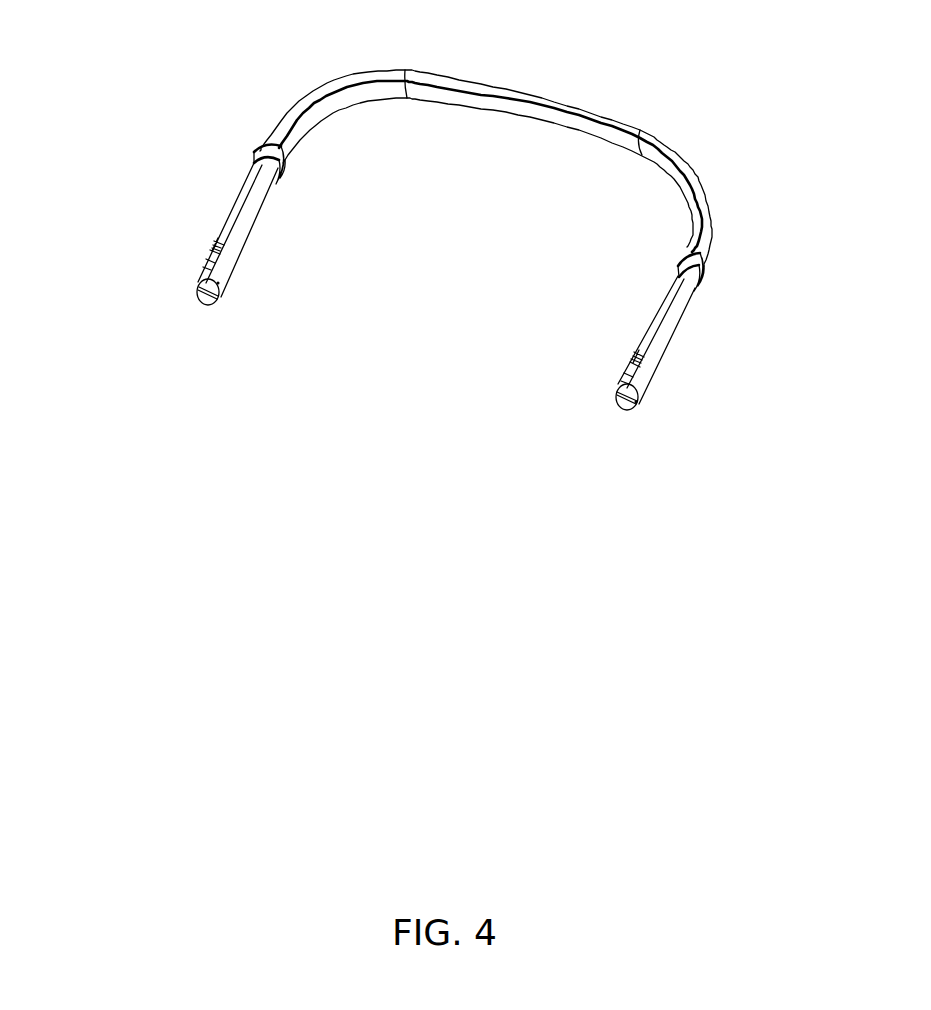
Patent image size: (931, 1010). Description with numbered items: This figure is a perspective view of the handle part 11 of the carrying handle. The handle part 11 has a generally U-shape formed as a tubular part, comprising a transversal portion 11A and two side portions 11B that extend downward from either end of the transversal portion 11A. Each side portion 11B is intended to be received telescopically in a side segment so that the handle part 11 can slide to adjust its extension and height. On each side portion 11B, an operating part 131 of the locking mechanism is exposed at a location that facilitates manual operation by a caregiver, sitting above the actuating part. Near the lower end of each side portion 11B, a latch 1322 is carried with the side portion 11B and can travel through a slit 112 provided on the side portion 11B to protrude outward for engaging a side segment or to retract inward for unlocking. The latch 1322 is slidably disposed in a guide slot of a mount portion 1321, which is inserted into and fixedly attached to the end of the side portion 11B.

The handle part 11 is at (439, 241).
The transversal portion 11A is at (531, 96).
The side portion 11B is at (247, 226).
The operating part 131 is at (264, 154).
The latch 1322 is at (213, 247).
The slit 112 is at (187, 256).
The mount portion 1321 is at (200, 288).